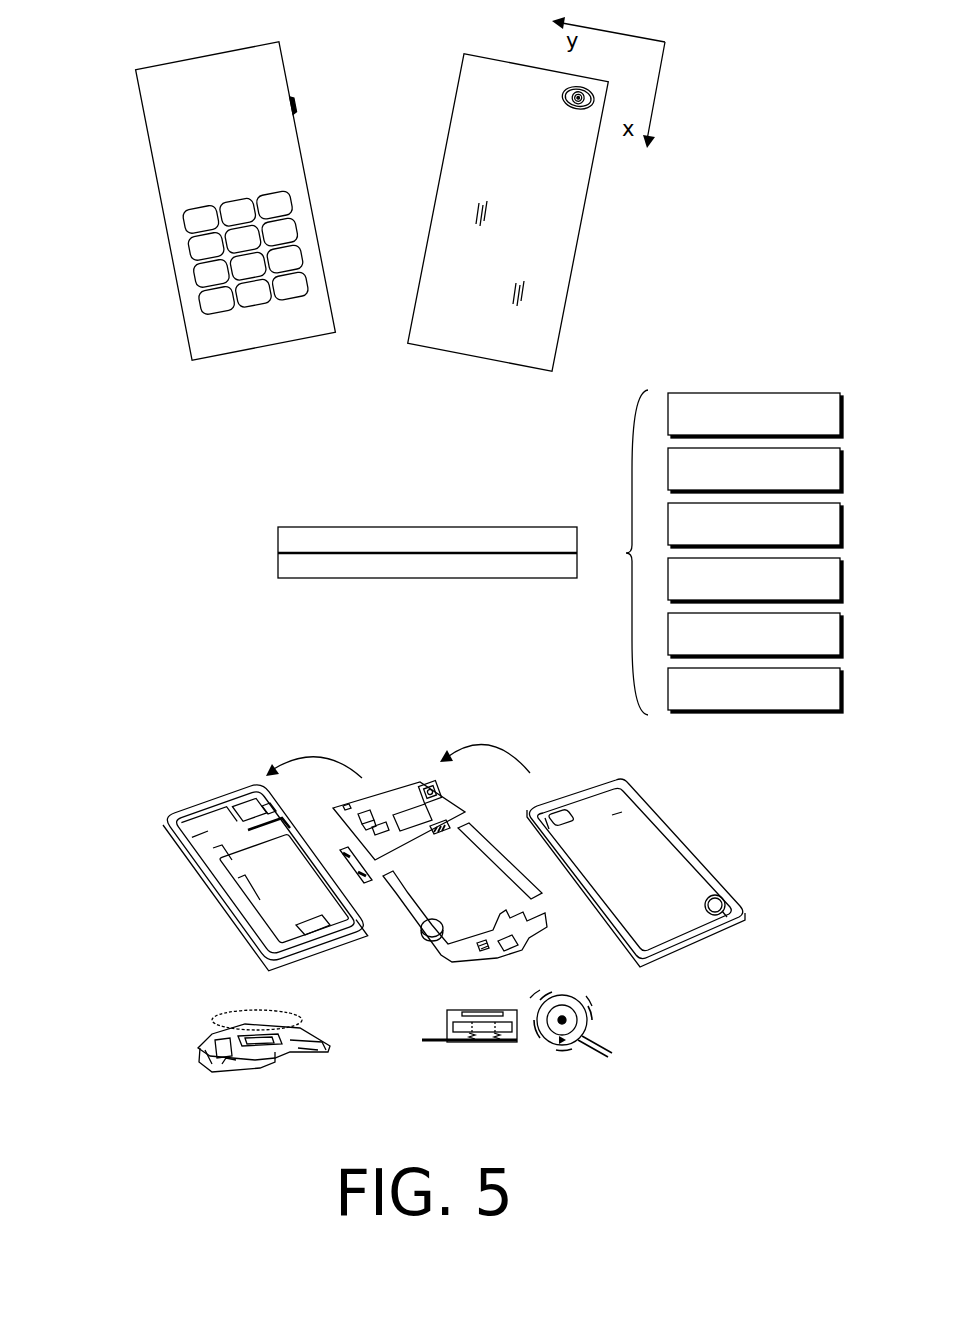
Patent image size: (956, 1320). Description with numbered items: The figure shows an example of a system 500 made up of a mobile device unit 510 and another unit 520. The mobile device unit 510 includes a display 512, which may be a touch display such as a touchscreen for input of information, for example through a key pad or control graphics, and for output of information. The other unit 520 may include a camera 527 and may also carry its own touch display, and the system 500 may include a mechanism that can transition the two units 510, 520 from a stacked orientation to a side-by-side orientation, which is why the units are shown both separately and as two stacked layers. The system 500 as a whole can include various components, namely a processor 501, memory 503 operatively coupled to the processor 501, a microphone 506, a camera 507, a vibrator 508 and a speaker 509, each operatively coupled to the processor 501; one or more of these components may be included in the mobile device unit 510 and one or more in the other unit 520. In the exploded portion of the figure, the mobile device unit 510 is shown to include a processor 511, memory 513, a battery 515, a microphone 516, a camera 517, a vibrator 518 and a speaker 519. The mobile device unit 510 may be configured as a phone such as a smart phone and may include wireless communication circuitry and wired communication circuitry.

The system 500 is at (203, 482).
The mobile device unit 510 is at (308, 338).
The display 512 is at (264, 93).
The unit 520 is at (563, 268).
The camera 527 is at (570, 107).
The processor 501 is at (755, 415).
The memory 503 is at (755, 470).
The microphone 506 is at (755, 525).
The camera 507 is at (755, 580).
The vibrator 508 is at (755, 635).
The speaker 509 is at (755, 690).
The processor 511 is at (427, 817).
The memory 513 is at (366, 808).
The battery 515 is at (245, 872).
The microphone 516 is at (480, 951).
The camera 517 is at (423, 783).
The vibrator 518 is at (435, 918).
The speaker 519 is at (303, 1033).